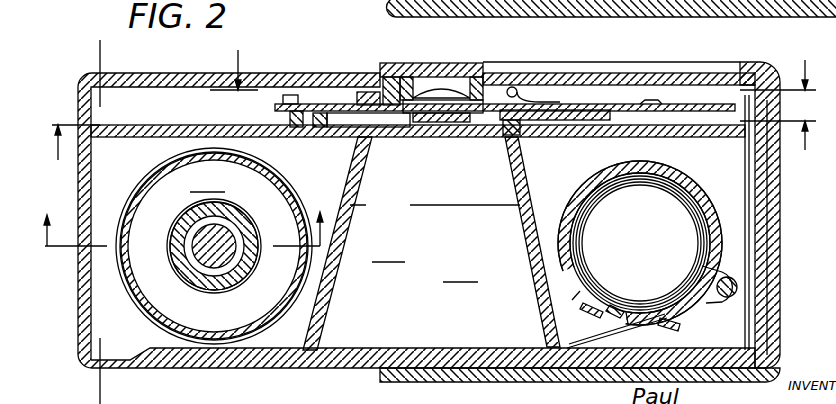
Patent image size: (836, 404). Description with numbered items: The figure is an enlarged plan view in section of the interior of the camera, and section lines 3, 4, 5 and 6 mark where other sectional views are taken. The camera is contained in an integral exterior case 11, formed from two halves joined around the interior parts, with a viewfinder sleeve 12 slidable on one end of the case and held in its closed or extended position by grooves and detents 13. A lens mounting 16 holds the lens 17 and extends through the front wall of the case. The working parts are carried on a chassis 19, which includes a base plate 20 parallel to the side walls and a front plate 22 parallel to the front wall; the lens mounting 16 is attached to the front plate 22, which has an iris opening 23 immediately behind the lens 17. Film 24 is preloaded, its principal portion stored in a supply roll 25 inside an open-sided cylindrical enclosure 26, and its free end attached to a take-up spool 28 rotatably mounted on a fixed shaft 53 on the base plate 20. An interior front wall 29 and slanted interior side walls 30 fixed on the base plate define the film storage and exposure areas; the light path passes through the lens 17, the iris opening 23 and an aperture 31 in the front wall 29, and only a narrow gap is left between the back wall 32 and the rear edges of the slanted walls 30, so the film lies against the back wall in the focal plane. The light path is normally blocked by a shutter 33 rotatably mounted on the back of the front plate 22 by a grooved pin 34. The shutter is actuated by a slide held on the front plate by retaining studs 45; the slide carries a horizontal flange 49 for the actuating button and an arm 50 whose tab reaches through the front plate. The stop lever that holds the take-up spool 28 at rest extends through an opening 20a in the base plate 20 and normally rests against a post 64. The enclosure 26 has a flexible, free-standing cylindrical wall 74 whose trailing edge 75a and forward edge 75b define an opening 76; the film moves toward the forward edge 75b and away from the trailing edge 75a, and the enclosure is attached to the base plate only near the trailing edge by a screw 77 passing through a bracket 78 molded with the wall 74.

The section line 3- 3 is at (424, 145).
The section line 4- 4 is at (517, 63).
The section line 5- 5 is at (171, 214).
The section line 6- 6 is at (98, 50).
The exterior case 11 is at (762, 289).
The viewfinder sleeve 12 is at (768, 203).
The grooves and detents 13 is at (392, 77).
The lens mounting 16 is at (488, 70).
The lens 17 is at (438, 92).
The chassis 19 is at (388, 250).
The base plate 20 is at (460, 270).
The opening in base plate 20a is at (303, 138).
The front plate 22 is at (585, 133).
The iris opening 23 is at (446, 138).
The film 24 is at (615, 332).
The supply roll 25 is at (703, 235).
The open-sided cylindrical enclosure 26 is at (672, 177).
The take-up spool 28 is at (214, 246).
The interior front wall 29 is at (388, 138).
The slanted interior side walls 30 is at (435, 207).
The aperture 31 is at (432, 140).
The back wall 32 is at (333, 353).
The shutter 33 is at (597, 130).
The grooved pin 34 is at (513, 142).
The retaining studs 45 is at (652, 103).
The horizontal flange 49 is at (356, 95).
The arm 50 is at (345, 100).
The fixed shaft 53 is at (213, 257).
The post 64 is at (283, 108).
The cylindrical wall 74 is at (592, 192).
The trailing edge 75a is at (664, 328).
The forward edge 75b is at (604, 317).
The opening in enclosure 76 is at (618, 312).
The screw 77 is at (727, 298).
The bracket 78 is at (733, 272).